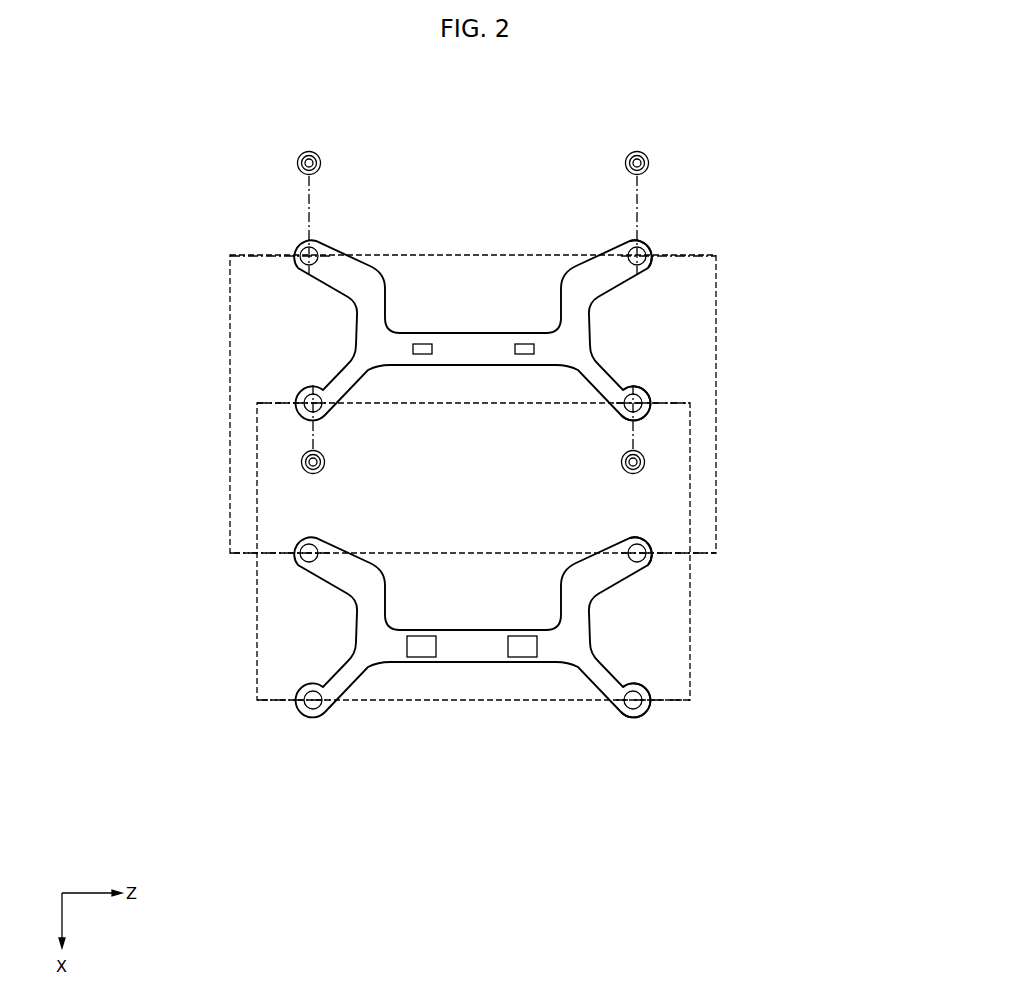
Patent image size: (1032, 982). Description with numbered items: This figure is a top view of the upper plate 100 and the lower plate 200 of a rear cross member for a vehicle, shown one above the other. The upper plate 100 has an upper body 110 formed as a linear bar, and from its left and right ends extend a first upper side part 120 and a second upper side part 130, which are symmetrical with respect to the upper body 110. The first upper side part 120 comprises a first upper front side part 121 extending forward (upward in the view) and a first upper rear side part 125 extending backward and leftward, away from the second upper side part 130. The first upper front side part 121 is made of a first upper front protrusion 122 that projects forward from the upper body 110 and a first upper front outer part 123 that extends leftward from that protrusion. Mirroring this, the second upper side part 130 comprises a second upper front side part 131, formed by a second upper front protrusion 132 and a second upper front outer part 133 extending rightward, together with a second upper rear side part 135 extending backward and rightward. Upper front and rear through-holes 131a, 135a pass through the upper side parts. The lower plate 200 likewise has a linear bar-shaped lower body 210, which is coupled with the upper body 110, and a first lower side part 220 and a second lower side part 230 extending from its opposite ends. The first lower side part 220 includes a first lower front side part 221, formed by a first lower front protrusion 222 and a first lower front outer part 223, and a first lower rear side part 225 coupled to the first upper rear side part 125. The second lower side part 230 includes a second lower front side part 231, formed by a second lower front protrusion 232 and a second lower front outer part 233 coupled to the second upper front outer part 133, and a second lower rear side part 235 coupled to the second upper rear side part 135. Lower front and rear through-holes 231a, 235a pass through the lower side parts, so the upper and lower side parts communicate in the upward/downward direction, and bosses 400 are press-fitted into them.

The upper plate 100 is at (431, 260).
The upper body 110 is at (467, 345).
The first upper side part 120 is at (97, 297).
The first upper front side part 121 is at (162, 268).
The first upper front protrusion 122 is at (365, 307).
The first upper front outer part 123 is at (330, 274).
The first upper rear side part 125 is at (340, 380).
The second upper side part 130 is at (852, 295).
The second upper front side part 131 is at (787, 265).
The upper front through-hole 131a is at (641, 251).
The second upper front protrusion 132 is at (581, 307).
The second upper front outer part 133 is at (616, 274).
The second upper rear side part 135 is at (606, 380).
The upper rear through-hole 135a is at (618, 407).
The lower plate 200 is at (469, 702).
The lower body 210 is at (478, 640).
The first lower side part 220 is at (97, 594).
The first lower front side part 221 is at (162, 565).
The first lower front protrusion 222 is at (365, 604).
The first lower front outer part 223 is at (330, 571).
The first lower rear side part 225 is at (340, 677).
The second lower side part 230 is at (852, 592).
The second lower front side part 231 is at (787, 562).
The lower front through-hole 231a is at (620, 548).
The second lower front protrusion 232 is at (581, 604).
The second lower front outer part 233 is at (616, 571).
The second lower rear side part 235 is at (606, 677).
The lower rear through-hole 235a is at (632, 718).
The boss 400 is at (300, 155).